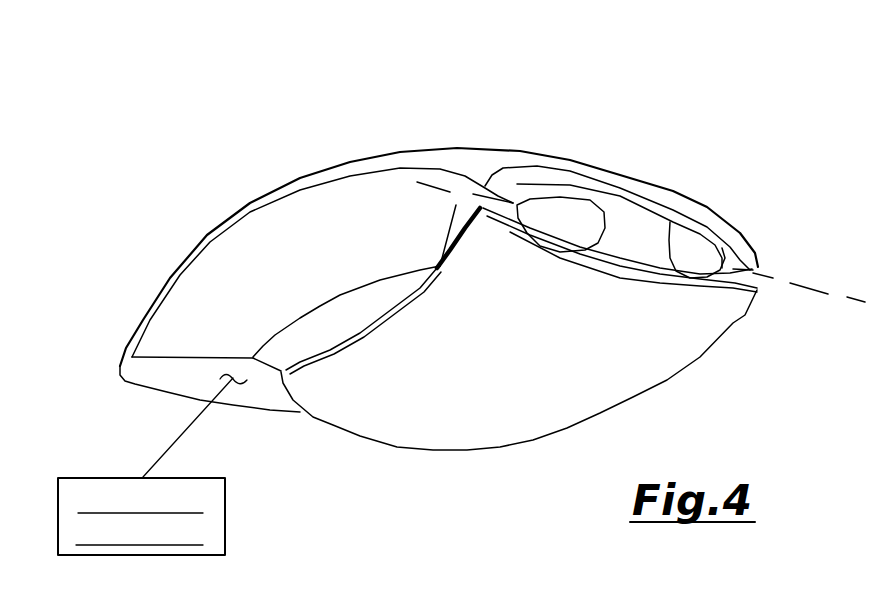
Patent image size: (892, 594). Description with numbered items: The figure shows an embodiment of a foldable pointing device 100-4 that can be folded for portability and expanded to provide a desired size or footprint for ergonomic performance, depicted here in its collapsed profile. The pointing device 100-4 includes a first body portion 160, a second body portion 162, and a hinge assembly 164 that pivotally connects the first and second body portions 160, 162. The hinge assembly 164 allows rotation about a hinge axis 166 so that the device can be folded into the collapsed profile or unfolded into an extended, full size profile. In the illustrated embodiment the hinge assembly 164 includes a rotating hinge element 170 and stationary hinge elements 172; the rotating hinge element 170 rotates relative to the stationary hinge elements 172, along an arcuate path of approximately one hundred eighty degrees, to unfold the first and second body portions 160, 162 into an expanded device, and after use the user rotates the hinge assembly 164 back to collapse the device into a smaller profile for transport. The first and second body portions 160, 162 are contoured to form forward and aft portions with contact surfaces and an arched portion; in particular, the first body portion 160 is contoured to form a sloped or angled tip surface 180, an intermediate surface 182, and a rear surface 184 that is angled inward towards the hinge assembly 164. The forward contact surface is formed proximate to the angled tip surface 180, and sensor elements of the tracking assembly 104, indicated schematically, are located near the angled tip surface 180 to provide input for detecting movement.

The pointing device 100-4 is at (588, 66).
The first body portion 160 is at (197, 155).
The second body portion 162 is at (733, 397).
The hinge assembly 164 is at (718, 176).
The hinge axis 166 is at (875, 253).
The rotating hinge element 170 is at (645, 127).
The stationary hinge elements 172 is at (443, 122).
The angled tip surface 180 is at (107, 456).
The intermediate surface 182 is at (319, 257).
The rear surface 184 is at (531, 314).
The tracking assembly 104 is at (317, 535).